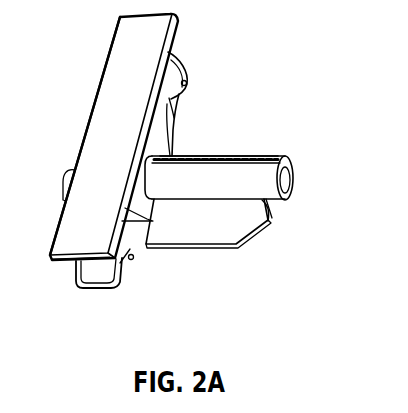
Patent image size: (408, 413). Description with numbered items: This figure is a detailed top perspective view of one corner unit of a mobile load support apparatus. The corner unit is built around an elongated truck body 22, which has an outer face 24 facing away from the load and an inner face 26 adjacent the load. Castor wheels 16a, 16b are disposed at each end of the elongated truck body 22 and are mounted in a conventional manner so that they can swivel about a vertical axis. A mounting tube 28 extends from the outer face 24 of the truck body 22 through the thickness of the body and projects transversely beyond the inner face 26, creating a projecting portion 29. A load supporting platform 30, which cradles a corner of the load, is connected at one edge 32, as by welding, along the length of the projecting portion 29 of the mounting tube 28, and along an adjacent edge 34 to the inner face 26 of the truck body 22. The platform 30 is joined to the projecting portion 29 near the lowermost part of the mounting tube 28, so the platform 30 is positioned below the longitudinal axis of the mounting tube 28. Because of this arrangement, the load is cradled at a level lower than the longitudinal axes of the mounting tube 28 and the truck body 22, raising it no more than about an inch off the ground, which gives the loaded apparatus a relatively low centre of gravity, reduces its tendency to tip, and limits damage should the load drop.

The truck body 22 is at (118, 63).
The outer face 24 is at (90, 127).
The castor wheel 16a is at (185, 70).
The castor wheel 16b is at (102, 288).
The inner face 26 is at (161, 127).
The mounting tube 28 is at (268, 180).
The projecting portion 29 is at (227, 156).
The load supporting platform 30 is at (230, 225).
The edge 32 is at (266, 222).
The adjacent edge 34 is at (153, 219).